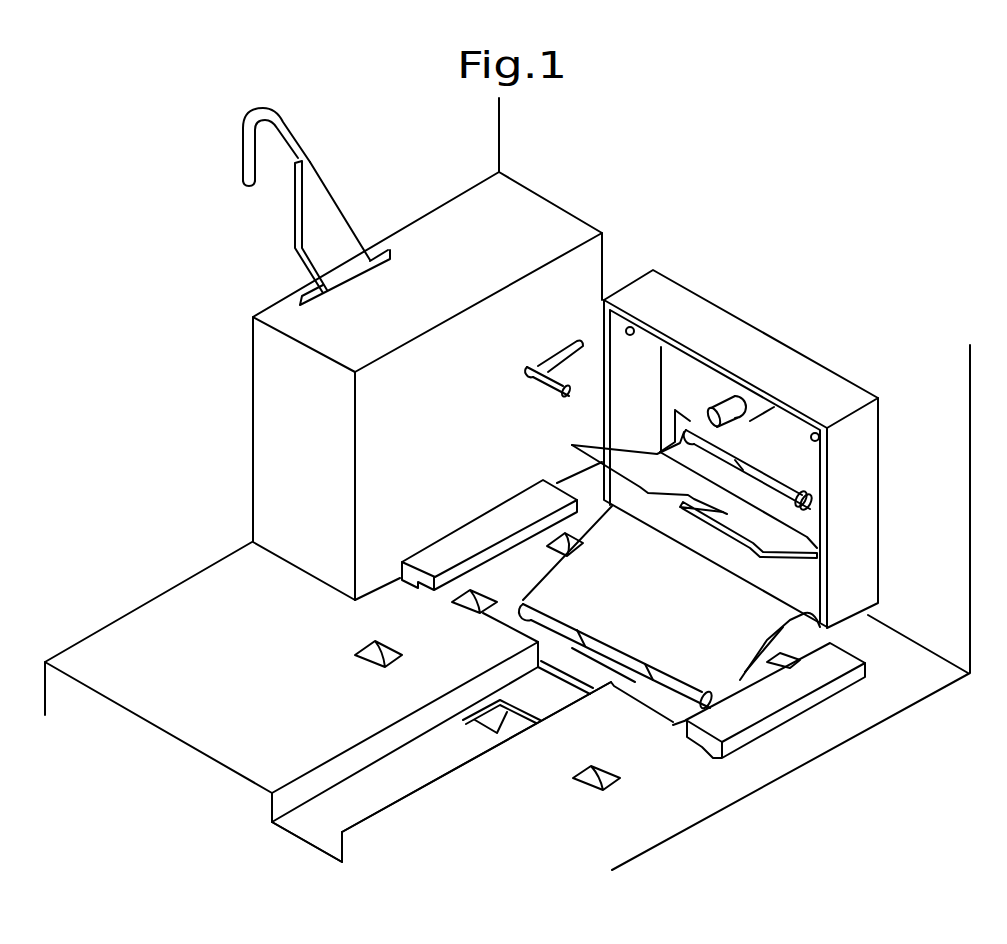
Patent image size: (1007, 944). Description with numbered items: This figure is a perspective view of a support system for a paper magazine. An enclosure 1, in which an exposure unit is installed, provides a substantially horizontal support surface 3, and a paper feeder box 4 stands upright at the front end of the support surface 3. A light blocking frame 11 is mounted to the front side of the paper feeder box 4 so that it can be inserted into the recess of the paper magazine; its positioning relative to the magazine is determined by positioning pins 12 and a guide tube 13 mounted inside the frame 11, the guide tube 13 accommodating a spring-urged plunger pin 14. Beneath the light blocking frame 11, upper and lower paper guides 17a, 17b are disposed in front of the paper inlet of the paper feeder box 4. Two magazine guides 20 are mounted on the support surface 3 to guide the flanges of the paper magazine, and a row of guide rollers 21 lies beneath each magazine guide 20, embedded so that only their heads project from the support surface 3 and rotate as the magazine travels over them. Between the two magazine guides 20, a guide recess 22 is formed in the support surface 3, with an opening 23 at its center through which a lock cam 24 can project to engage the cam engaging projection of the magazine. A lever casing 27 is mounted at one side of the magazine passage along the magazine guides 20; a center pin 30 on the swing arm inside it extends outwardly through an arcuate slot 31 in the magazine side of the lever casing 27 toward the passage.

The enclosure 1 is at (923, 722).
The support surface 3 is at (637, 812).
The paper feeder box 4 is at (512, 126).
The light blocking frame 11 is at (740, 332).
The positioning pins 12 is at (647, 322).
The guide tube 13 is at (757, 403).
The plunger pin 14 is at (727, 401).
The upper paper guide 17a is at (787, 540).
The lower paper guide 17b is at (770, 600).
The magazine guides 20 is at (437, 553).
The guide rollers 21 is at (465, 607).
The guide recess 22 is at (353, 765).
The opening 23 is at (475, 722).
The lock cam 24 is at (494, 738).
The lever casing 27 is at (258, 438).
The center pin 30 is at (543, 385).
The arcuate slot 31 is at (557, 355).